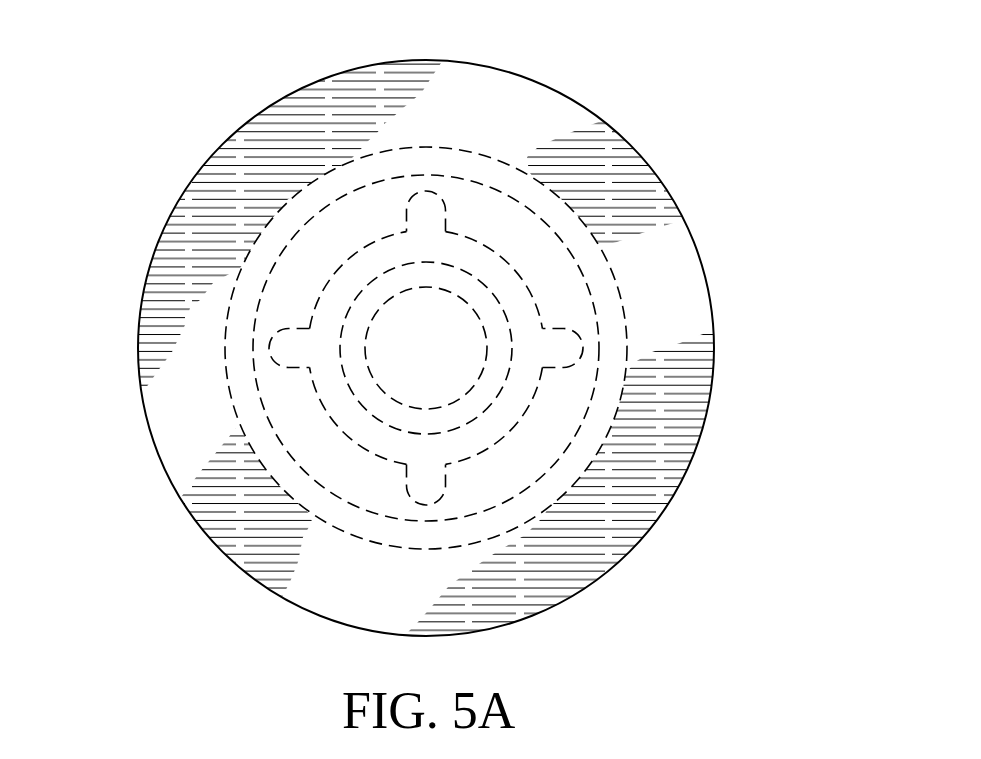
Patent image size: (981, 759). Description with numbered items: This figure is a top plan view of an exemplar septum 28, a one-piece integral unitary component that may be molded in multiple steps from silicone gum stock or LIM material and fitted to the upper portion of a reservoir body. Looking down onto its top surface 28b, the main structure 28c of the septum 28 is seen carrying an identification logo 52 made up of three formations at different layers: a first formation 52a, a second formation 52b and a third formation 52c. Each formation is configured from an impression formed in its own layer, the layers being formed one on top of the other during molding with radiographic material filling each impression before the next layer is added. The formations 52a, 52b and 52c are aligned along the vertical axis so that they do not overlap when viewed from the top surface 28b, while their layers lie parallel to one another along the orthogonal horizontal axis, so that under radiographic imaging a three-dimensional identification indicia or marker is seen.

The septum 28 is at (668, 125).
The top surface 28b is at (480, 200).
The main structure 28c is at (183, 402).
The identification logo 52 is at (620, 452).
The first formation 52a is at (348, 420).
The second formation 52b is at (597, 268).
The third formation 52c is at (445, 362).